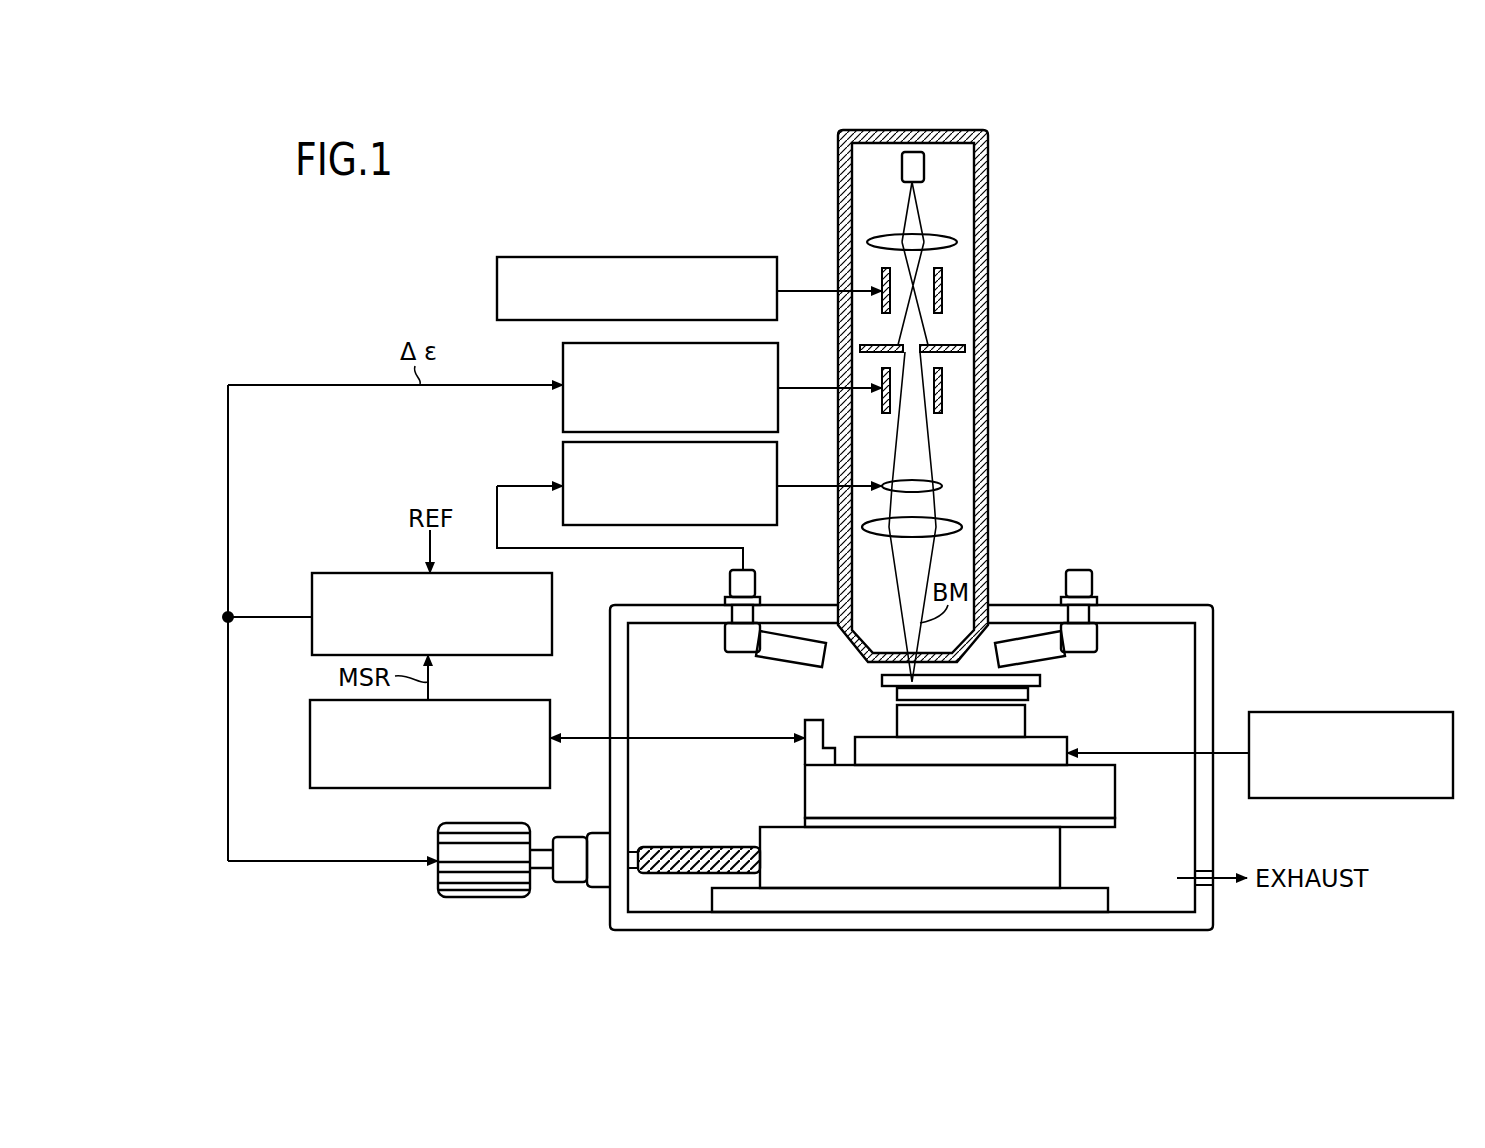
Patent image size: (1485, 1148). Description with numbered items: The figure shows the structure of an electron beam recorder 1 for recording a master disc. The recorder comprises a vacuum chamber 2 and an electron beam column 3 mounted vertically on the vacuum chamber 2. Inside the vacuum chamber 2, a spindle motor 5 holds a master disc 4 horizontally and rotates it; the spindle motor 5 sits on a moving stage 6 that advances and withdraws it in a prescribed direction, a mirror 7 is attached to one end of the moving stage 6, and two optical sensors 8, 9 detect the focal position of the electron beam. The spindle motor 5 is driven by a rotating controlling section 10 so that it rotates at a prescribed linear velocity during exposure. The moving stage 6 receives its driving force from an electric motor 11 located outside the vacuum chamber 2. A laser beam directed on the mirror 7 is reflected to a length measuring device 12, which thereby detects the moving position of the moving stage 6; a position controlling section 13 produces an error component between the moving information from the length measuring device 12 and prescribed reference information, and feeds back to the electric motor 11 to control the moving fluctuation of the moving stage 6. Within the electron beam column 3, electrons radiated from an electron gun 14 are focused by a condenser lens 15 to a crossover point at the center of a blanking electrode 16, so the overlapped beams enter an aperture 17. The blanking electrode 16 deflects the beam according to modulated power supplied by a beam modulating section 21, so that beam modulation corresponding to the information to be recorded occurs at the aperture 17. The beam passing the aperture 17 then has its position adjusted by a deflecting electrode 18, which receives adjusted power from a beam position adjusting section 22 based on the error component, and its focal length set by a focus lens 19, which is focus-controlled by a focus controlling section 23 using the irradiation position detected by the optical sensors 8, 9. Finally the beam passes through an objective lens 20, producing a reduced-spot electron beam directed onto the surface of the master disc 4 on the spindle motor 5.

The electron beam recorder 1 is at (820, 205).
The vacuum chamber 2 is at (1158, 612).
The electron beam column 3 is at (953, 130).
The master disc 4 is at (1042, 679).
The spindle motor 5 is at (1028, 717).
The moving stage 6 is at (812, 787).
The mirror 7 is at (803, 735).
The optical sensor 8 is at (790, 665).
The optical sensor 9 is at (1032, 646).
The rotating controlling section 10 is at (1343, 712).
The electric motor 11 is at (480, 891).
The length measuring device 12 is at (503, 700).
The position controlling section 13 is at (345, 573).
The electron gun 14 is at (918, 163).
The condenser lens 15 is at (945, 236).
The blanking electrode 16 is at (943, 287).
The aperture 17 is at (950, 347).
The deflecting electrode 18 is at (943, 388).
The focus lens 19 is at (940, 487).
The objective lens 20 is at (955, 527).
The beam modulating section 21 is at (497, 285).
The beam position adjusting section 22 is at (563, 366).
The focus controlling section 23 is at (563, 471).